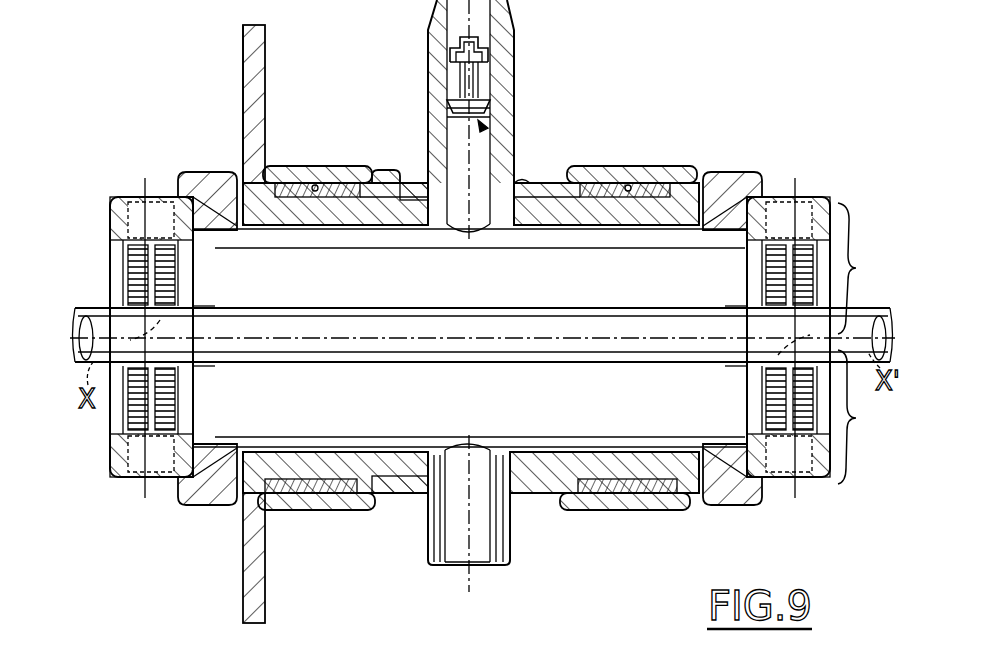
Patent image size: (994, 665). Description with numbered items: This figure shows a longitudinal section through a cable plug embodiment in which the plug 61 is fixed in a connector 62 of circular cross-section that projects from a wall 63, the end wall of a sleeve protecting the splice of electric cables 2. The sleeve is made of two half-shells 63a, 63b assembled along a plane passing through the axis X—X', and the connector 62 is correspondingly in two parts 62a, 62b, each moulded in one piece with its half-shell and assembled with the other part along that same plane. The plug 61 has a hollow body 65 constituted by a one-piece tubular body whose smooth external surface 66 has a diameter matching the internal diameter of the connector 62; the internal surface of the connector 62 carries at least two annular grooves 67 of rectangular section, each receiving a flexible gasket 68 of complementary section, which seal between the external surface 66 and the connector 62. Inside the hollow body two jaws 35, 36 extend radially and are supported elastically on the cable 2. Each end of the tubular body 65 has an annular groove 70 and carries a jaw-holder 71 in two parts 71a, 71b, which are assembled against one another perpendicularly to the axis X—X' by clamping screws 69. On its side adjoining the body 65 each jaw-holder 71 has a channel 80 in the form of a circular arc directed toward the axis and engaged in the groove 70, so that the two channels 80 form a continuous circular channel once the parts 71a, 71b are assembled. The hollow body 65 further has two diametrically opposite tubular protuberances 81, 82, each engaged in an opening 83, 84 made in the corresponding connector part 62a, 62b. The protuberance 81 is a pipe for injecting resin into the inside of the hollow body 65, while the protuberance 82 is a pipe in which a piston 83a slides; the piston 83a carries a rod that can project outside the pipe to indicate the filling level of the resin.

The cable 2 is at (662, 314).
The jaw 35 is at (178, 388).
The jaw 36 is at (762, 410).
The plug 61 is at (616, 212).
The connector 62 is at (383, 178).
The connector part 62a is at (406, 186).
The connector part 62b is at (398, 458).
The wall 63 is at (258, 60).
The half-shell 63a is at (256, 100).
The half-shell 63b is at (262, 552).
The hollow body 65 is at (392, 210).
The external surface 66 is at (565, 182).
The annular groove 67 is at (328, 183).
The gasket 68 is at (320, 215).
The clamping screw 69 is at (182, 322).
The annular groove 70 is at (247, 188).
The jaw-holder 71 is at (118, 186).
The jaw-holder part 71a is at (869, 268).
The jaw-holder part 71b is at (869, 417).
The channel 80 is at (222, 185).
The pipe 81 is at (505, 528).
The pipe 82 is at (508, 84).
The opening 83 is at (490, 125).
The piston 83a is at (482, 46).
The opening 84 is at (522, 184).